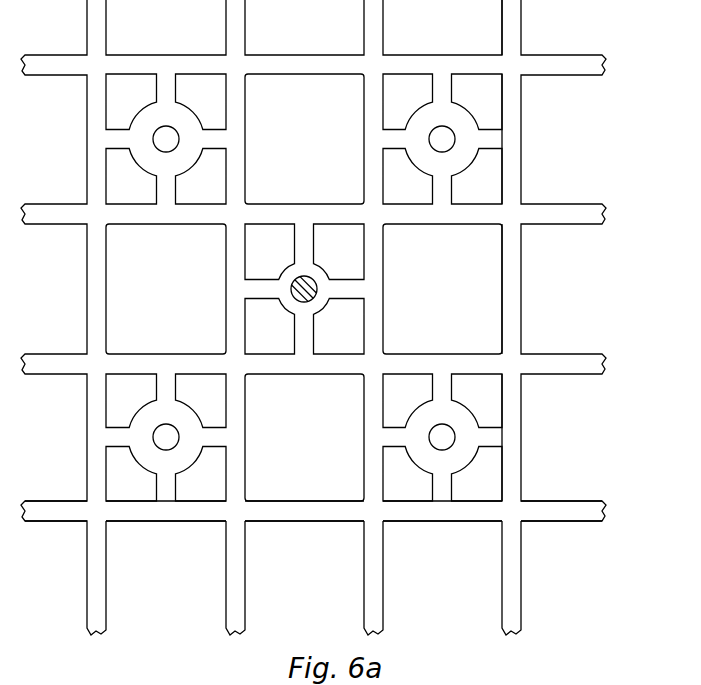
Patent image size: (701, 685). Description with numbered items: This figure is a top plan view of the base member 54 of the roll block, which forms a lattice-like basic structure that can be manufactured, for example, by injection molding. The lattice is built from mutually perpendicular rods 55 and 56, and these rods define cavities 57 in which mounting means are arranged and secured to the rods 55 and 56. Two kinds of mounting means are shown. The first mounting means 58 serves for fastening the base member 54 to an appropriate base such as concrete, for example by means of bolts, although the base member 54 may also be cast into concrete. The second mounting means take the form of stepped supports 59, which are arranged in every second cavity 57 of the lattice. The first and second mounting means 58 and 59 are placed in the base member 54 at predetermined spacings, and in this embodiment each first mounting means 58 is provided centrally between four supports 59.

The base member 54 is at (344, 317).
The rod 55 is at (511, 592).
The rod 56 is at (581, 505).
The cavity 57 is at (442, 289).
The first mounting means 58 is at (315, 303).
The stepped support 59 is at (188, 158).